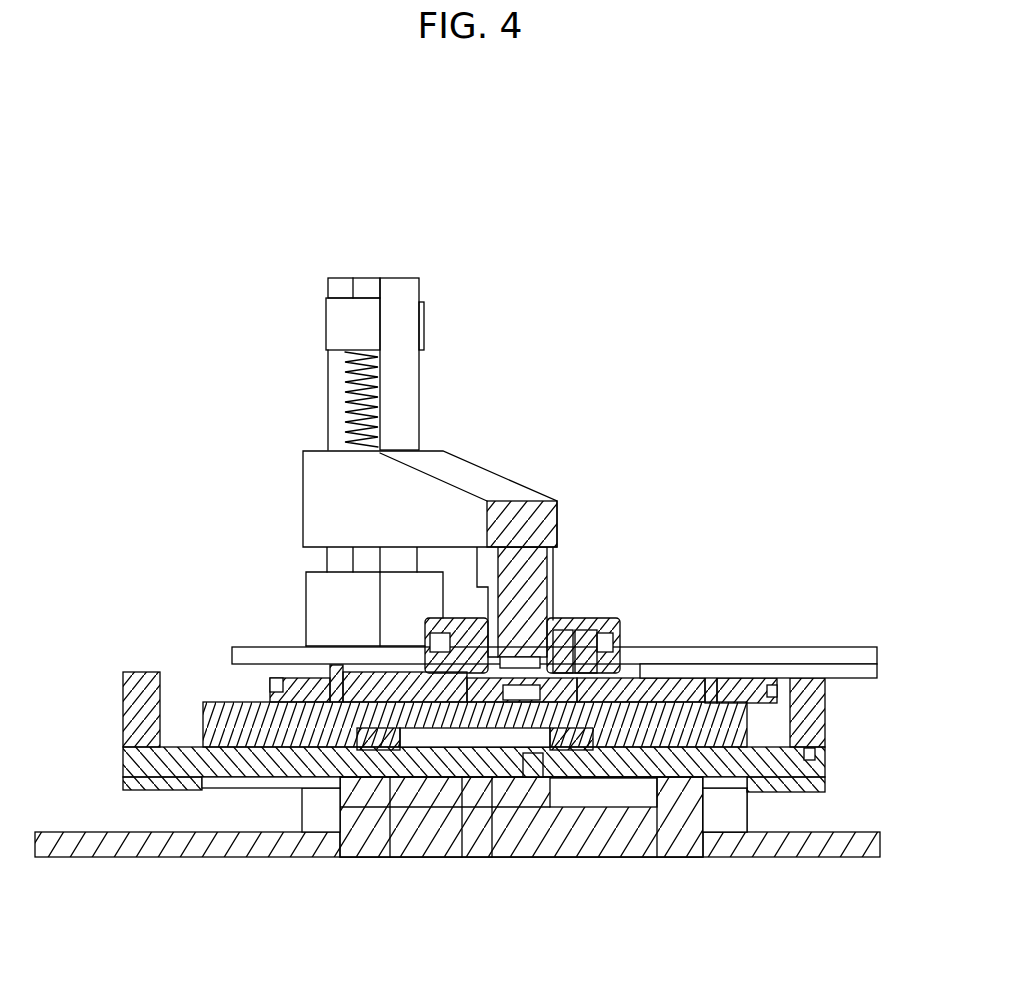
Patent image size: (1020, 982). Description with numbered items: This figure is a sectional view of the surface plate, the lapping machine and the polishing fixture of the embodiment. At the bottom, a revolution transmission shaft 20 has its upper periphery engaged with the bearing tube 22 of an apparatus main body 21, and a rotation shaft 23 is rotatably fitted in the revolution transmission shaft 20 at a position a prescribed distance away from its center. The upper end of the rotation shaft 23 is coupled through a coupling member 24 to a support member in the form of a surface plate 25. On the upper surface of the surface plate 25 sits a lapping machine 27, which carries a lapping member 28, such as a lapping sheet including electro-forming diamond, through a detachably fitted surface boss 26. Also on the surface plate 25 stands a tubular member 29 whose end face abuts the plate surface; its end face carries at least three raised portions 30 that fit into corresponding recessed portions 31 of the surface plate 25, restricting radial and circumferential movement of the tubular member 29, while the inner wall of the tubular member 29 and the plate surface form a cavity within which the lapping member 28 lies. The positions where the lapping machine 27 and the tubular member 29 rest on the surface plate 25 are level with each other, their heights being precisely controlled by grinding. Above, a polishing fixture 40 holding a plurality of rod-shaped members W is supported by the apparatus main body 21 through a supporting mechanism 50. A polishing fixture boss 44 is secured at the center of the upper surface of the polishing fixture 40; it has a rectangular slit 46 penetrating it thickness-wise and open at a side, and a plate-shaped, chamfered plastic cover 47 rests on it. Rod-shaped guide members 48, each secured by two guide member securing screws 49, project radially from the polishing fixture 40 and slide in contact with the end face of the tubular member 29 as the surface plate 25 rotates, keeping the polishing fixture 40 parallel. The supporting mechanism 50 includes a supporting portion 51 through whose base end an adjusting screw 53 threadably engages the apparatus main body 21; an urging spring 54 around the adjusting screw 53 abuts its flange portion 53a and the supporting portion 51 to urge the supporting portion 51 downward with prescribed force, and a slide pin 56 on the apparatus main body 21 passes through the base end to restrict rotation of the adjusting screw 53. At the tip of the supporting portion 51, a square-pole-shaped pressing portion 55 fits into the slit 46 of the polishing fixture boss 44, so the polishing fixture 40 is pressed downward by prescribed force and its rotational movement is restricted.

The revolution transmission shaft 20 is at (425, 857).
The apparatus main body 21 is at (322, 600).
The bearing tube 22 is at (140, 858).
The rotation shaft 23 is at (473, 857).
The coupling member 24 is at (525, 790).
The surface plate 25 is at (767, 793).
The surface boss 26 is at (573, 783).
The lapping machine 27 is at (255, 708).
The lapping member 28 is at (303, 700).
The tubular member 29 is at (825, 648).
The raised portions 30 is at (812, 752).
The recessed portions 31 is at (790, 770).
The polishing fixture 40 is at (793, 648).
The polishing fixture boss 44 is at (610, 650).
The slit 46 is at (570, 650).
The plastic cover 47 is at (590, 650).
The guide members 48 is at (758, 648).
The guide member securing screws 49 is at (707, 647).
The supporting mechanism 50 is at (548, 408).
The supporting portion 51 is at (330, 497).
The adjusting screw 53 is at (360, 348).
The flange portion 53a is at (362, 330).
The urging spring 54 is at (352, 423).
The pressing portion 55 is at (547, 577).
The slide pin 56 is at (397, 325).
The rod-shaped member W is at (182, 698).